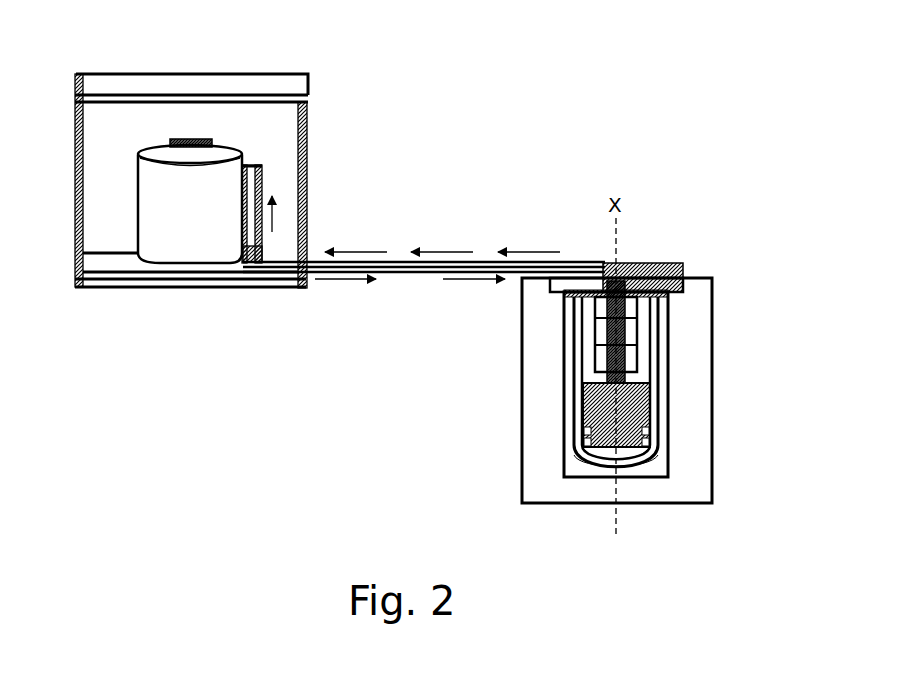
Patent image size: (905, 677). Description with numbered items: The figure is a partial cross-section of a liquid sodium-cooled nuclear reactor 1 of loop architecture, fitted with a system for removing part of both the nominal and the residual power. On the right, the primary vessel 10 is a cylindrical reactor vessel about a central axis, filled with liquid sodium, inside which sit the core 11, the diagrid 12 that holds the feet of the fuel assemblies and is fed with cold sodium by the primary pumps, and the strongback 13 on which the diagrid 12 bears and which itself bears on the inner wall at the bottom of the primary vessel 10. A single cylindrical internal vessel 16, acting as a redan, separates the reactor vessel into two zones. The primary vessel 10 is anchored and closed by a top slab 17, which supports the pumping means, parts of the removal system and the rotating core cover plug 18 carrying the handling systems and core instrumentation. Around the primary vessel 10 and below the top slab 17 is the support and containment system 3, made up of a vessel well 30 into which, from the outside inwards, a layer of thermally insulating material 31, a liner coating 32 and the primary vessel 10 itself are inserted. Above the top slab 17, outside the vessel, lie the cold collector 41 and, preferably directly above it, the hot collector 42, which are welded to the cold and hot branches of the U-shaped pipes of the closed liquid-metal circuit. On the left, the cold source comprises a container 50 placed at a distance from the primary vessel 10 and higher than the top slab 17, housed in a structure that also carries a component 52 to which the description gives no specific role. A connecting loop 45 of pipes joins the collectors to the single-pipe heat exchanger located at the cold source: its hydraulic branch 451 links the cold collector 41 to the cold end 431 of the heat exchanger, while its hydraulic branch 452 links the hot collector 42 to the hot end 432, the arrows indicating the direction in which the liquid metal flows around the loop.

The liquid sodium-cooled nuclear reactor 1 is at (521, 186).
The support and containment system 3 is at (450, 447).
The primary vessel 10 is at (627, 462).
The core 11 is at (660, 400).
The diagrid 12 is at (662, 422).
The strongback 13 is at (665, 440).
The internal vessel 16 is at (652, 350).
The top slab 17 is at (620, 272).
The core cover plug 18 is at (568, 368).
The vessel well 30 is at (548, 430).
The layer of thermally insulating material 31 is at (564, 457).
The liner coating 32 is at (576, 462).
The cold collector 41 is at (698, 284).
The hot collector 42 is at (680, 278).
The connecting loop 45 is at (487, 366).
The container 50 is at (185, 250).
The base housing 52 is at (78, 289).
The cold end of the single-pipe heat exchanger 431 is at (250, 272).
The hot end of the single-pipe heat exchanger 432 is at (246, 162).
The hydraulic branch 451 is at (437, 274).
The hydraulic branch 452 is at (402, 274).